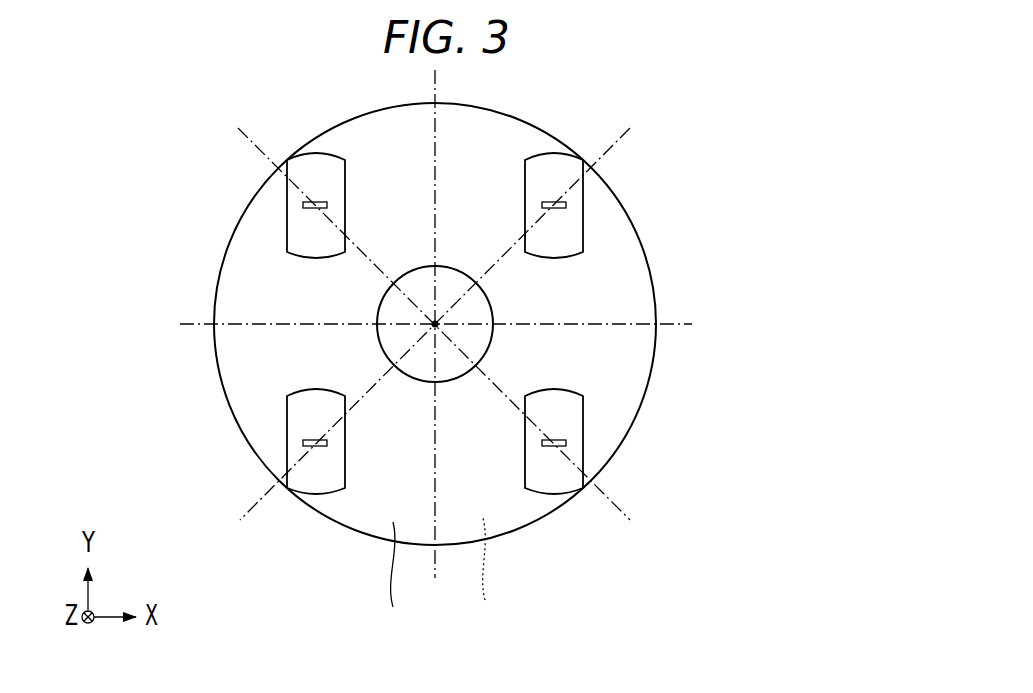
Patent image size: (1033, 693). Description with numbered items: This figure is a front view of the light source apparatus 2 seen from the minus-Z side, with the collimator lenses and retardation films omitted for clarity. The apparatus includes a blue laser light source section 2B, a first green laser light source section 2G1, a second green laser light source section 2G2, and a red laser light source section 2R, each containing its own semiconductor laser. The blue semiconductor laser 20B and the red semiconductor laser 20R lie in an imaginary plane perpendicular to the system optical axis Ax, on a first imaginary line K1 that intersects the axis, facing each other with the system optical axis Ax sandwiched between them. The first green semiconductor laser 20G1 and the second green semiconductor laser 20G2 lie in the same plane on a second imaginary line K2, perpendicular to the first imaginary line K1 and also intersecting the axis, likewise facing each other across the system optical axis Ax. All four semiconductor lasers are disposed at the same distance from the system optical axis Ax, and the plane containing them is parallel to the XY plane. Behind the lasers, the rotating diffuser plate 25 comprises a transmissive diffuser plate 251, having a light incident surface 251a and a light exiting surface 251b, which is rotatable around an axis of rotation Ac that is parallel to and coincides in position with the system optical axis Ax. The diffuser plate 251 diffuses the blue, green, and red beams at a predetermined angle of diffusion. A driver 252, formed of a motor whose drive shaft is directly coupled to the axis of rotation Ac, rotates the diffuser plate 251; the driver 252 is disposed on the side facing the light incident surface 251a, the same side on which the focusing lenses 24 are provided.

The light source apparatus 2 is at (466, 358).
The red laser light source section 2R is at (260, 144).
The first green laser light source section 2G1 is at (613, 144).
The second green laser light source section 2G2 is at (259, 508).
The blue laser light source section 2B is at (607, 511).
The red semiconductor laser 20R is at (323, 202).
The first green semiconductor laser 20G1 is at (546, 202).
The second green semiconductor laser 20G2 is at (325, 447).
The blue semiconductor laser 20B is at (547, 447).
The focusing lenses 24 is at (295, 223).
The rotating diffuser plate 25 is at (521, 324).
The diffuser plate 251 is at (645, 252).
The light incident surface 251a is at (399, 582).
The light exiting surface 251b is at (493, 580).
The driver 252 is at (487, 305).
The system optical axis Ax is at (595, 353).
The axis of rotation Ac is at (435, 324).
The first imaginary line K1 is at (620, 503).
The second imaginary line K2 is at (252, 503).